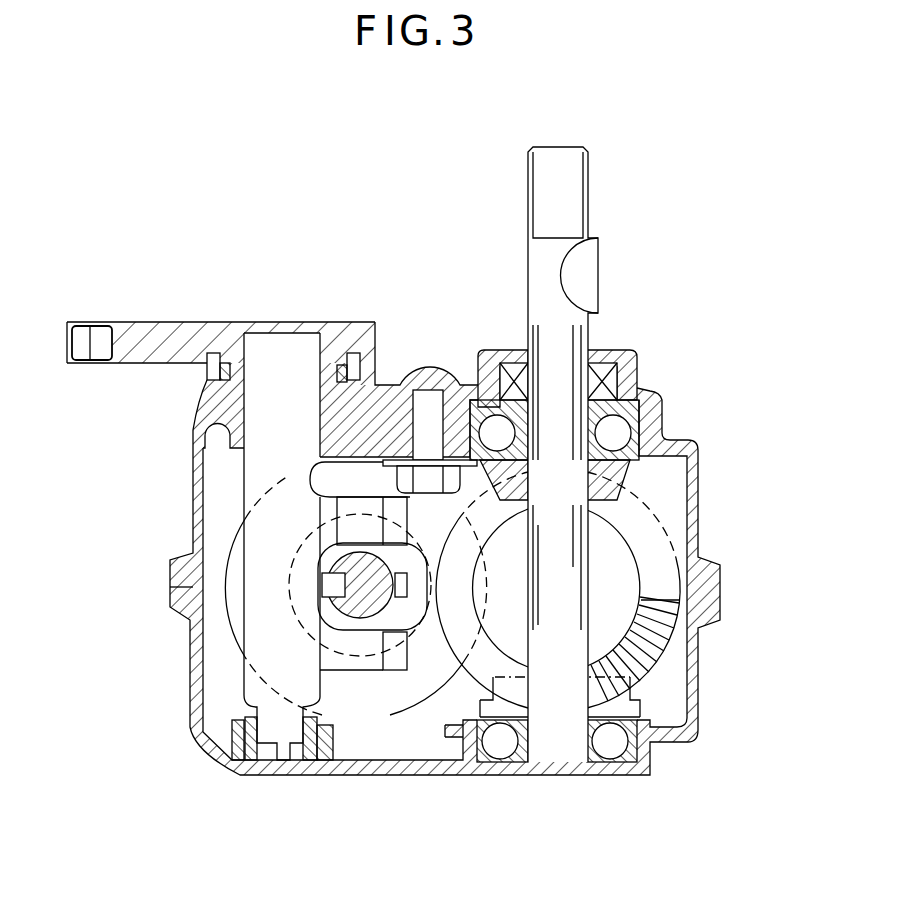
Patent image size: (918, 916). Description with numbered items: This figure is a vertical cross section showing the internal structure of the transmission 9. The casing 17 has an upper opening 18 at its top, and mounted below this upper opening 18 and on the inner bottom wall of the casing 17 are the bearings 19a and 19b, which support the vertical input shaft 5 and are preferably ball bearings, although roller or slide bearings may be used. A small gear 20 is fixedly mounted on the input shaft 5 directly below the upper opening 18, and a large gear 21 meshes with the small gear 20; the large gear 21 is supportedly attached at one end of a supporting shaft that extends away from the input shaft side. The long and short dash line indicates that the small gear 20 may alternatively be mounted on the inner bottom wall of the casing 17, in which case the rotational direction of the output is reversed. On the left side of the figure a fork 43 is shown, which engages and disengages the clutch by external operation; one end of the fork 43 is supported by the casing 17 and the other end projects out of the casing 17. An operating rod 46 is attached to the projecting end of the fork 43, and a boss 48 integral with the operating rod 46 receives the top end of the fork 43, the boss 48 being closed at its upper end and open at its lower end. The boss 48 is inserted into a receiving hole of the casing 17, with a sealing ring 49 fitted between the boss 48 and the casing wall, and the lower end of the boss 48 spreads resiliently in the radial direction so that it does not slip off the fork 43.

The input shaft 5 is at (536, 280).
The transmission 9 is at (349, 187).
The casing 17 is at (700, 466).
The upper opening 18 is at (595, 348).
The bearing 19a is at (663, 414).
The bearing 19b is at (647, 750).
The small gear 20 is at (630, 478).
The large gear 21 is at (620, 670).
The fork 43 is at (244, 490).
The operating rod 46 is at (150, 323).
The boss 48 is at (200, 405).
The sealing ring 49 is at (227, 327).